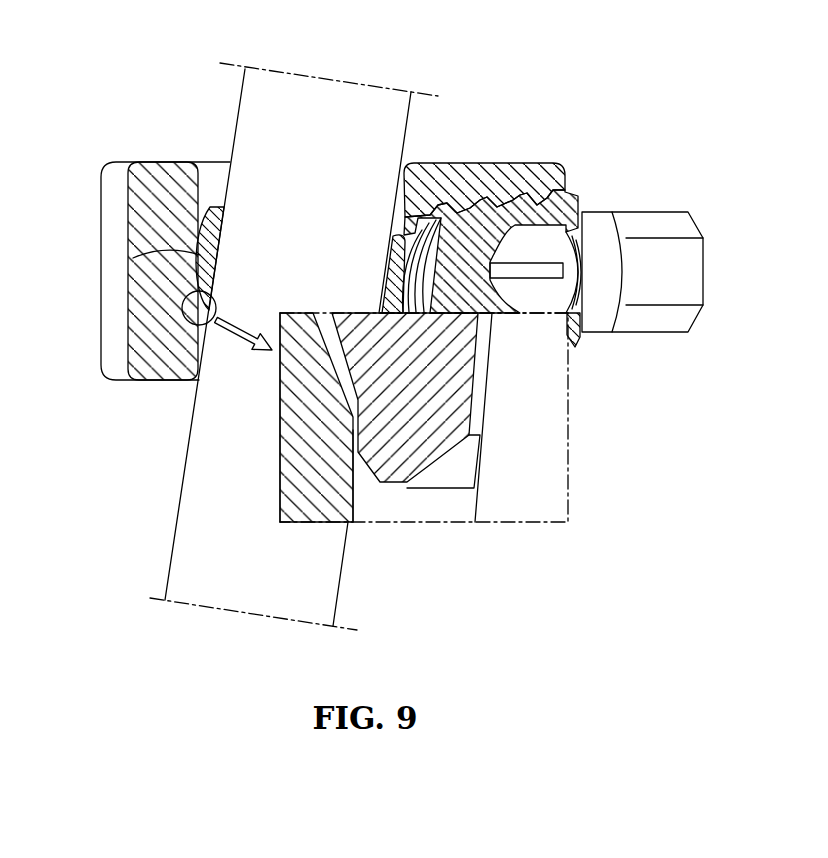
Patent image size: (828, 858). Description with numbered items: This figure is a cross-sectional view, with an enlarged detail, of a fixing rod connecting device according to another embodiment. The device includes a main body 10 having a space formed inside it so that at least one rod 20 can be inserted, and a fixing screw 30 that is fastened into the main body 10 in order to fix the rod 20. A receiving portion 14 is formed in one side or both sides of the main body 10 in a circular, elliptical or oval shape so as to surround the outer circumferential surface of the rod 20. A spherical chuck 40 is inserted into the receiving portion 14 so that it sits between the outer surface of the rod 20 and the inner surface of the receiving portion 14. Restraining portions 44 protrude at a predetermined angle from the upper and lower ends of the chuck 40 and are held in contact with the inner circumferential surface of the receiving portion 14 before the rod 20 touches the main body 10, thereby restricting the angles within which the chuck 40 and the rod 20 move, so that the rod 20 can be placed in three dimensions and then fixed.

The main body 10 is at (147, 310).
The receiving portion 14 is at (381, 508).
The rod 20 is at (328, 88).
The fixing screw 30 is at (652, 220).
The spherical chuck 40 is at (192, 253).
The restraining portions 44 is at (370, 464).